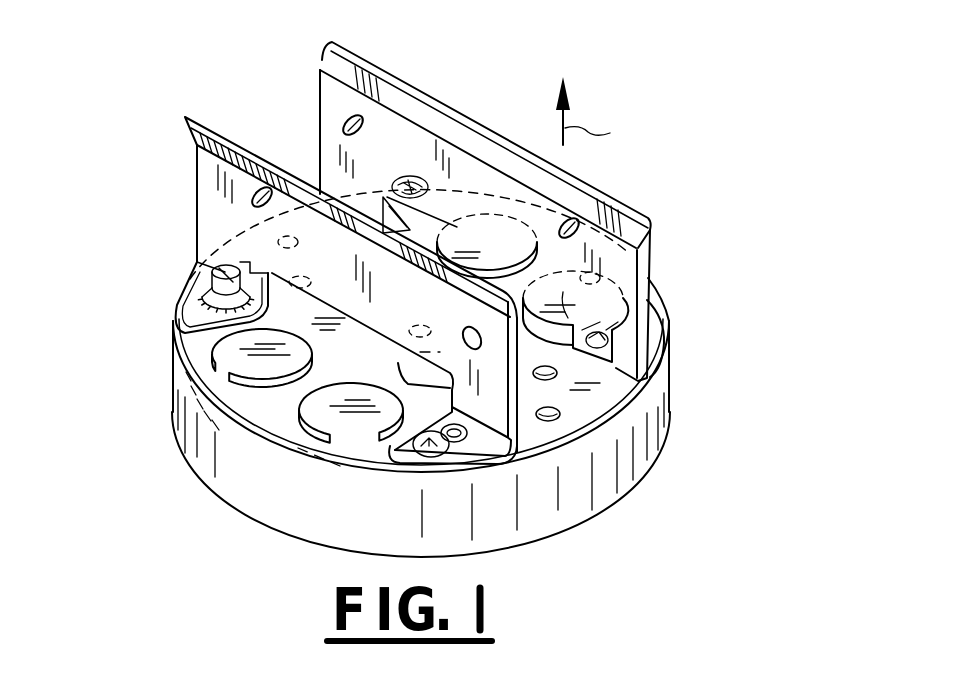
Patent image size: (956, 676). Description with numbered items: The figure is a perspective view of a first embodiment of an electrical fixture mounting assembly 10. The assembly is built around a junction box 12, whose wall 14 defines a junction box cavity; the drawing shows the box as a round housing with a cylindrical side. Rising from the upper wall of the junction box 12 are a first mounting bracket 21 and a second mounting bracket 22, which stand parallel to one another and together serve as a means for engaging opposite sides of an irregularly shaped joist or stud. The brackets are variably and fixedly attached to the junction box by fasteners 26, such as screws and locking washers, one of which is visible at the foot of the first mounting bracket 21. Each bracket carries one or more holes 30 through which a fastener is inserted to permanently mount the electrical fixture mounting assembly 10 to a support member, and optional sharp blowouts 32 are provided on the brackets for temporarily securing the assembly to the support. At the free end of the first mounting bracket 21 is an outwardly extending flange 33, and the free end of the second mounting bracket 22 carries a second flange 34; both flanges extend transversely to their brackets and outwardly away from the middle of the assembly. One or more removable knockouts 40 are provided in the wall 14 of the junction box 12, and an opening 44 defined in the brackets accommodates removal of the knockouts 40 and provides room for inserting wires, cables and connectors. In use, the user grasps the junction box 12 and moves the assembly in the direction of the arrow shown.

The electrical fixture mounting assembly 10 is at (452, 84).
The junction box 12 is at (182, 476).
The wall 14 is at (600, 488).
The first mounting bracket 21 is at (207, 165).
The second mounting bracket 22 is at (330, 97).
The fasteners 26 is at (195, 282).
The holes 30 is at (253, 197).
The blowouts 32 is at (342, 127).
The flange 33 is at (185, 128).
The second flange 34 is at (333, 60).
The knockouts 40 is at (228, 351).
The opening 44 is at (398, 364).